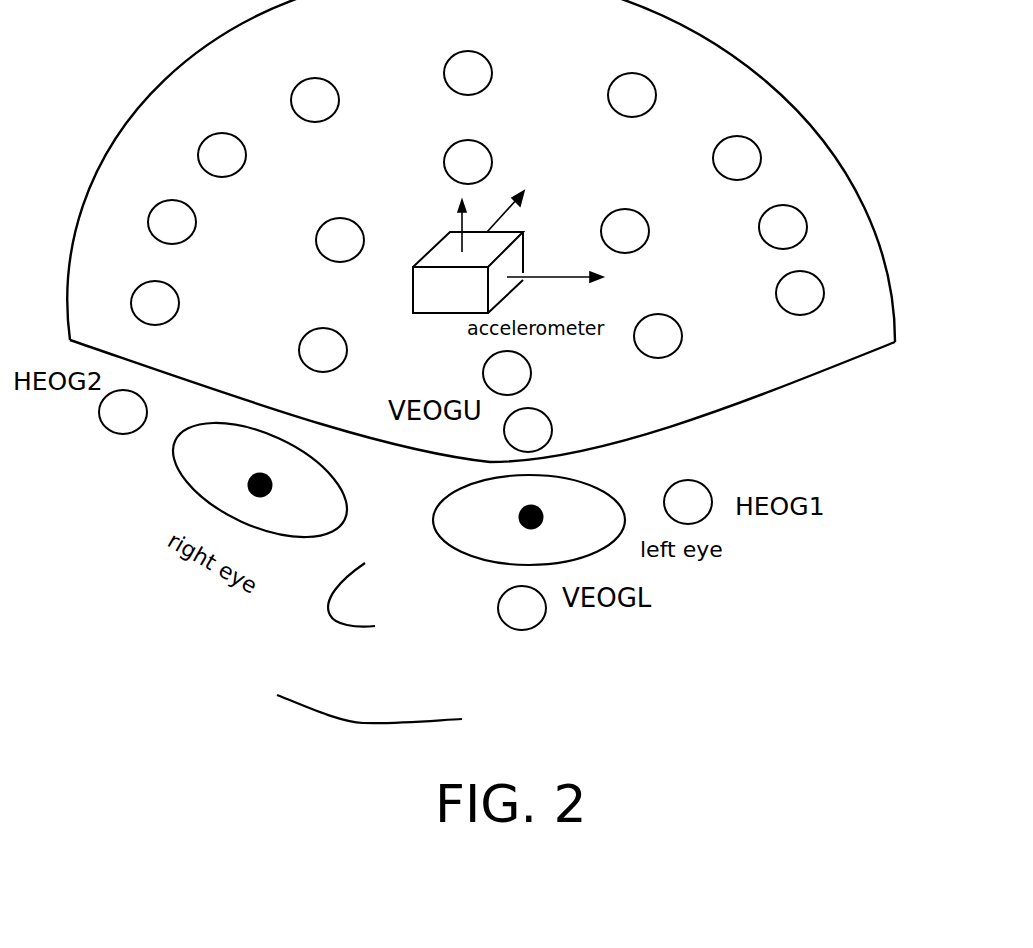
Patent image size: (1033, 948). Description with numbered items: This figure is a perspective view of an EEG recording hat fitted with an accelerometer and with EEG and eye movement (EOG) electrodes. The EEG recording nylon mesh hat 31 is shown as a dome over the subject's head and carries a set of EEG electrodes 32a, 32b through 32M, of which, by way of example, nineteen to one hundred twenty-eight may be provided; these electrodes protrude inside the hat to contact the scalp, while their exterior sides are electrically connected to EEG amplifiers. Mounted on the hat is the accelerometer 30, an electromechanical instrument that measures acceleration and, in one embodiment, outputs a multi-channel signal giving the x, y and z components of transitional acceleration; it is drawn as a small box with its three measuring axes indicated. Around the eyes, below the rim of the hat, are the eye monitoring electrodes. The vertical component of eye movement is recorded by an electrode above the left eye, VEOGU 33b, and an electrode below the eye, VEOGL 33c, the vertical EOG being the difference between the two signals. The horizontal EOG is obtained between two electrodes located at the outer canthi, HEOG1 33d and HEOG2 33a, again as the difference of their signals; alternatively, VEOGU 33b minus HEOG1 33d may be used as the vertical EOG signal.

The accelerometer 30 is at (403, 342).
The EEG recording nylon mesh hat 31 is at (713, 80).
The EEG electrode 32a is at (184, 303).
The EEG electrode 32b is at (200, 222).
The EEG electrode 32M is at (822, 307).
The HEOG2 electrode 33a is at (689, 486).
The VEOGU electrode 33b is at (501, 431).
The VEOGL electrode 33c is at (552, 617).
The HEOG1 electrode 33d is at (95, 427).